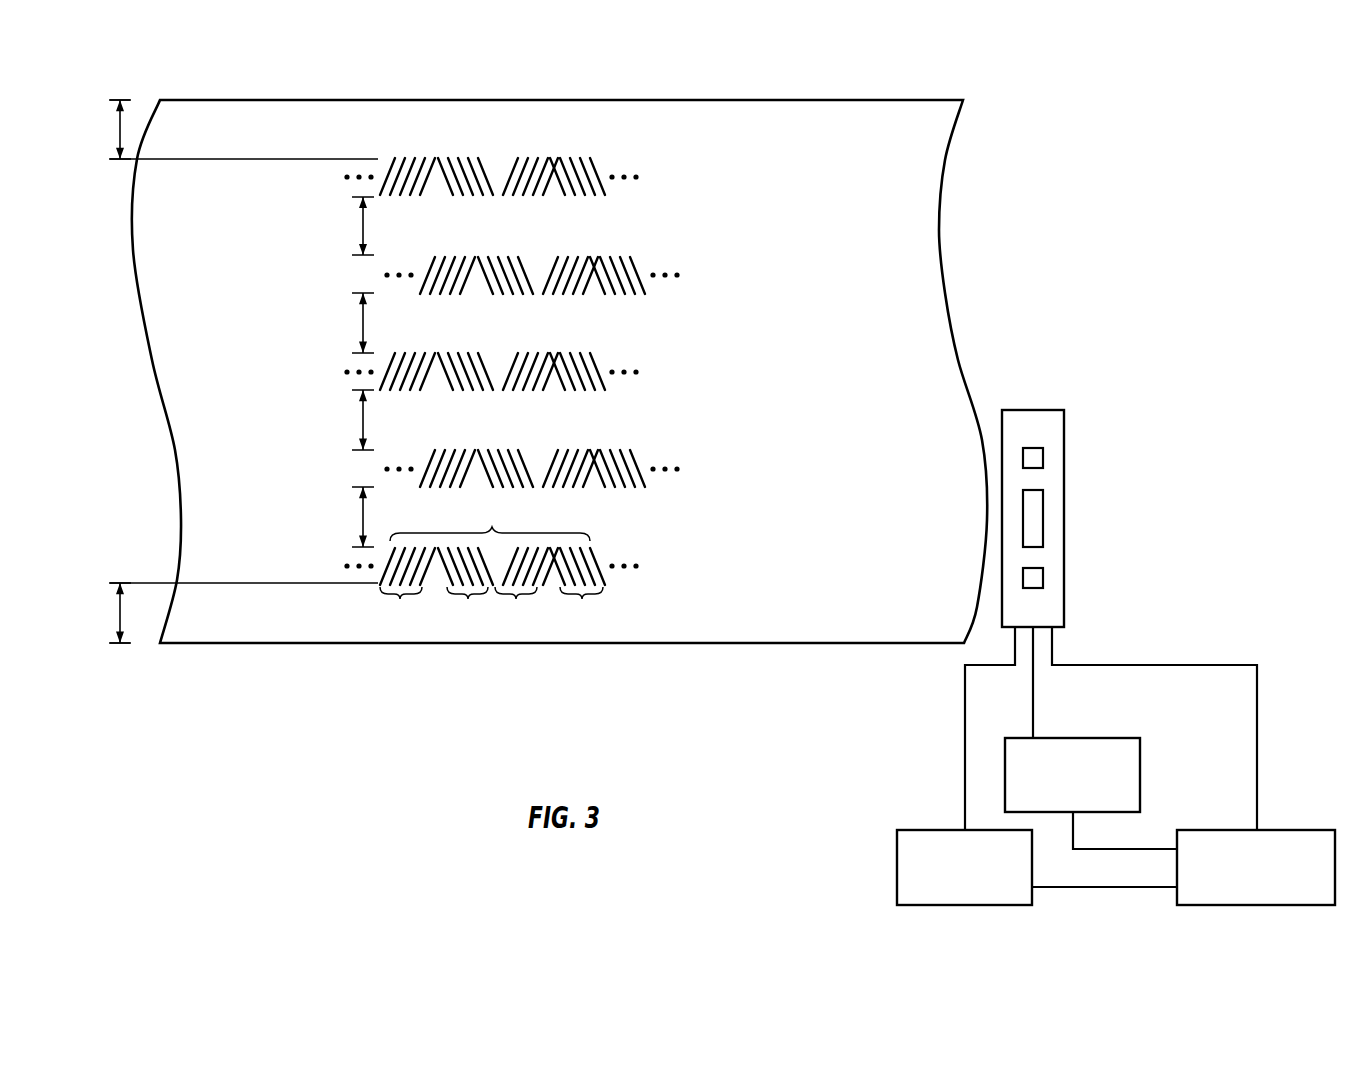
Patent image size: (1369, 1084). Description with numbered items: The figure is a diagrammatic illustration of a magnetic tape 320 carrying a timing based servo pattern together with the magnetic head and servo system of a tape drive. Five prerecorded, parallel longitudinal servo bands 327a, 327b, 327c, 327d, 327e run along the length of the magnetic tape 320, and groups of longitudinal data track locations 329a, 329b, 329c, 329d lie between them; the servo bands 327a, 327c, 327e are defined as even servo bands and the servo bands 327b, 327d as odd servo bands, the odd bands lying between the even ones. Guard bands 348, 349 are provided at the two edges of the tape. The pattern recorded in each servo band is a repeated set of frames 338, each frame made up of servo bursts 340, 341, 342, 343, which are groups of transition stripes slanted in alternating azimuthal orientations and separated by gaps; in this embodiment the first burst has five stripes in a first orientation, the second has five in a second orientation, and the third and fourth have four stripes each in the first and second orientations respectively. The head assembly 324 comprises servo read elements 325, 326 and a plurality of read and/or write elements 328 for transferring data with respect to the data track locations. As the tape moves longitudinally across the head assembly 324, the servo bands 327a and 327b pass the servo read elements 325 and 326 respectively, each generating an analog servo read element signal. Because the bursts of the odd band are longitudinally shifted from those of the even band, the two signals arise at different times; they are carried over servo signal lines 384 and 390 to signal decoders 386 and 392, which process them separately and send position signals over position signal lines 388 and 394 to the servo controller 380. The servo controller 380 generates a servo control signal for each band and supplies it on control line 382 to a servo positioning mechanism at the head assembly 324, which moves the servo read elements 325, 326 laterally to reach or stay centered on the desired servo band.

The magnetic tape 320 is at (832, 100).
The head assembly 324 is at (1033, 408).
The servo read element 325 is at (1043, 457).
The servo read element 326 is at (1043, 578).
The read and/or write elements 328 is at (1043, 520).
The servo band 327a is at (603, 163).
The servo band 327b is at (644, 262).
The servo band 327c is at (604, 357).
The servo band 327d is at (644, 456).
The servo band 327e is at (603, 553).
The data track locations 329a is at (289, 214).
The data track locations 329b is at (289, 311).
The data track locations 329c is at (289, 408).
The data track locations 329d is at (289, 505).
The frame 338 is at (490, 520).
The servo burst 340 is at (401, 611).
The servo burst 341 is at (467, 611).
The servo burst 342 is at (516, 611).
The servo burst 343 is at (581, 611).
The guard band 348 is at (118, 130).
The guard band 349 is at (118, 615).
The servo controller 380 is at (1303, 830).
The control line 382 is at (1153, 665).
The servo signal line 384 is at (965, 750).
The signal decoder 386 is at (897, 868).
The position signal line 388 is at (1105, 888).
The servo signal line 390 is at (1033, 712).
The signal decoder 392 is at (1140, 773).
The position signal line 394 is at (1125, 850).